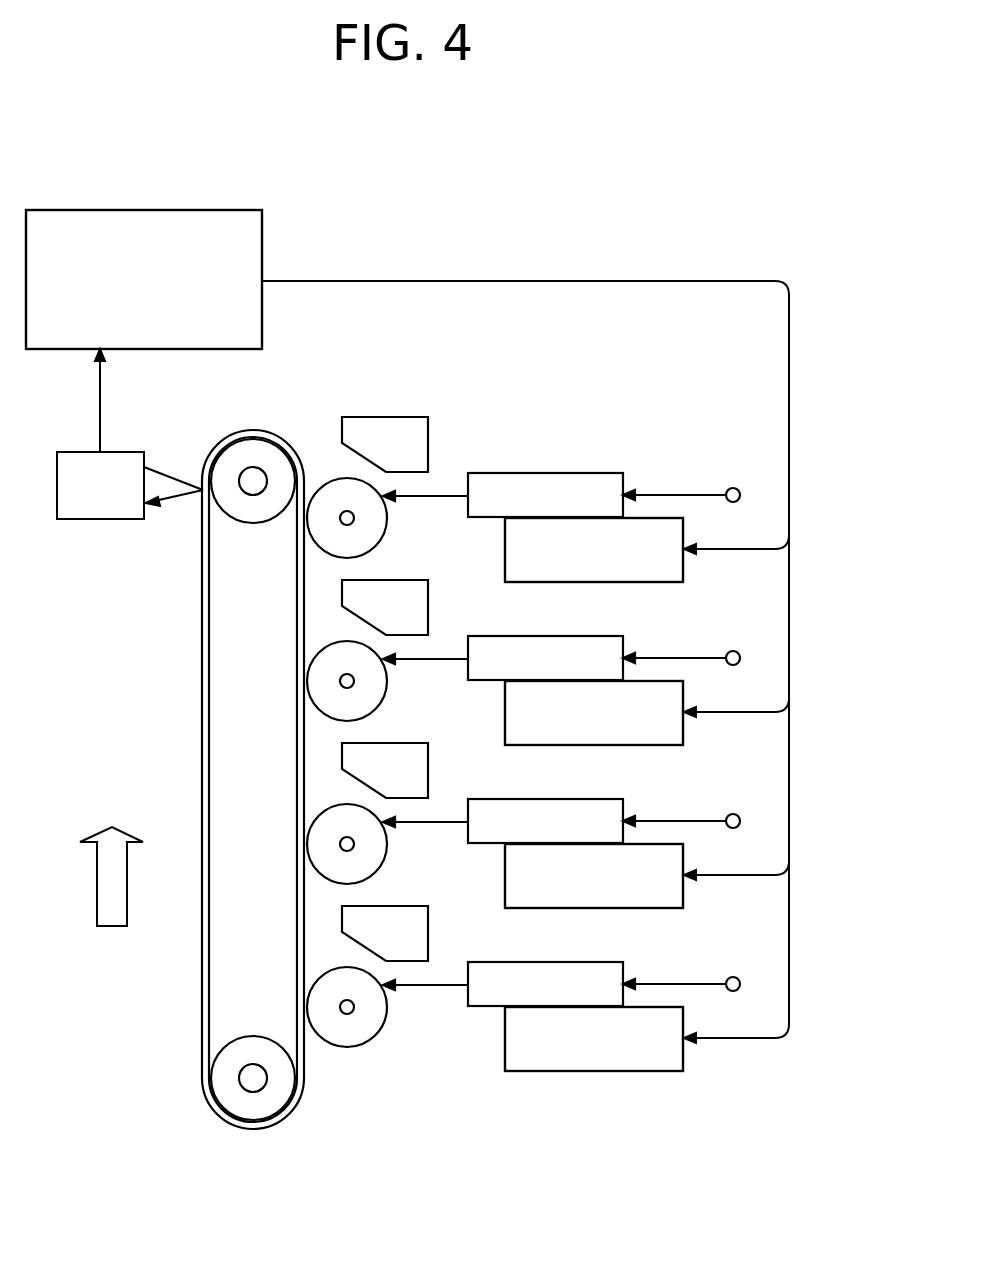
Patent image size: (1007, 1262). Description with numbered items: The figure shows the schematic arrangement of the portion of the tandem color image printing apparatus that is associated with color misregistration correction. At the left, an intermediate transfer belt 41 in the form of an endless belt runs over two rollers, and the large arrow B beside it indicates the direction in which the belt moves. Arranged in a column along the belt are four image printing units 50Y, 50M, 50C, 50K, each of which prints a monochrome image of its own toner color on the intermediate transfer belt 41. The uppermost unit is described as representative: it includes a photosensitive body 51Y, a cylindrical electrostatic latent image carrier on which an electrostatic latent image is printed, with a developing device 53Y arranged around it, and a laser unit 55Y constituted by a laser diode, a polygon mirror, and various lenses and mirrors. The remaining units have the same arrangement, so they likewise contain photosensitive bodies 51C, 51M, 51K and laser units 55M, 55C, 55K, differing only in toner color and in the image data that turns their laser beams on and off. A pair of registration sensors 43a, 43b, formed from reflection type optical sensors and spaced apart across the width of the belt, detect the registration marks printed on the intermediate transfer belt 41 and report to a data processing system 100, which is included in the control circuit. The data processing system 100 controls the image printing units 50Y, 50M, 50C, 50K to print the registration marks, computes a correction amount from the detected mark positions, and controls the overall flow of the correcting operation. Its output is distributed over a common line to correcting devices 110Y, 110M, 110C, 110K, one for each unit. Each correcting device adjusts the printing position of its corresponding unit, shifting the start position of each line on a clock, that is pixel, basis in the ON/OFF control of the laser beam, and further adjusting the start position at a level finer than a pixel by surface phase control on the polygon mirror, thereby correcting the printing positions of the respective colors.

The data processing system 100 is at (207, 210).
The registration sensor 43a is at (125, 482).
The registration sensor 43b is at (79, 520).
The intermediate transfer belt 41 is at (202, 689).
The belt moving direction B is at (97, 873).
The image printing unit 50Y is at (523, 454).
The image printing unit 50M is at (523, 652).
The image printing unit 50C is at (523, 815).
The image printing unit 50K is at (523, 978).
The developing device 53Y is at (395, 417).
The photosensitive body 51Y is at (382, 536).
The photosensitive body 51C is at (382, 699).
The photosensitive body 51M is at (382, 862).
The photosensitive body 51K is at (382, 1025).
The laser unit 55Y is at (530, 473).
The laser unit 55M is at (520, 636).
The laser unit 55C is at (520, 799).
The laser unit 55K is at (520, 962).
The correcting device 110Y is at (684, 535).
The correcting device 110M is at (684, 698).
The correcting device 110C is at (684, 861).
The correcting device 110K is at (684, 1024).